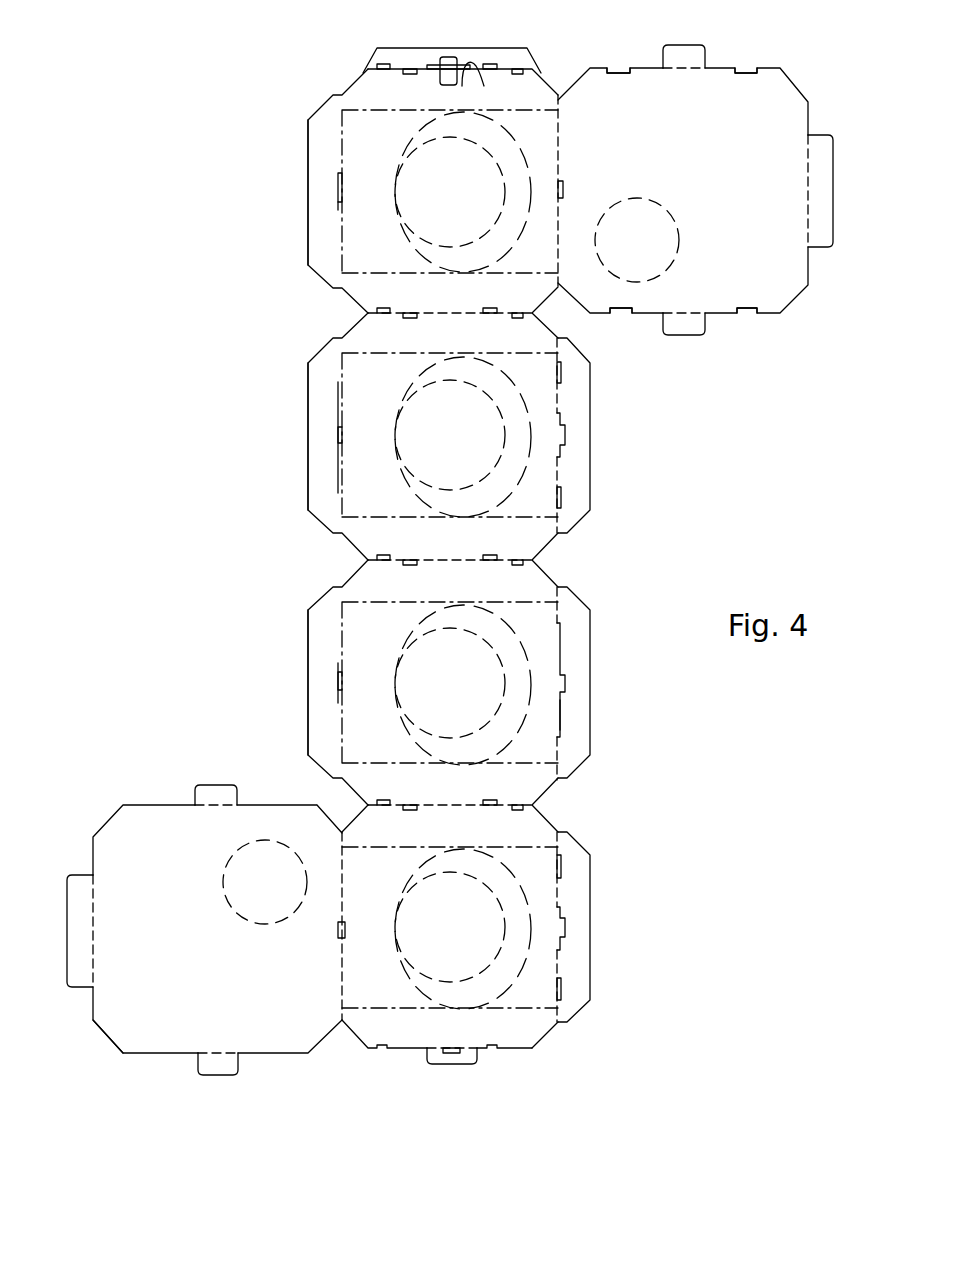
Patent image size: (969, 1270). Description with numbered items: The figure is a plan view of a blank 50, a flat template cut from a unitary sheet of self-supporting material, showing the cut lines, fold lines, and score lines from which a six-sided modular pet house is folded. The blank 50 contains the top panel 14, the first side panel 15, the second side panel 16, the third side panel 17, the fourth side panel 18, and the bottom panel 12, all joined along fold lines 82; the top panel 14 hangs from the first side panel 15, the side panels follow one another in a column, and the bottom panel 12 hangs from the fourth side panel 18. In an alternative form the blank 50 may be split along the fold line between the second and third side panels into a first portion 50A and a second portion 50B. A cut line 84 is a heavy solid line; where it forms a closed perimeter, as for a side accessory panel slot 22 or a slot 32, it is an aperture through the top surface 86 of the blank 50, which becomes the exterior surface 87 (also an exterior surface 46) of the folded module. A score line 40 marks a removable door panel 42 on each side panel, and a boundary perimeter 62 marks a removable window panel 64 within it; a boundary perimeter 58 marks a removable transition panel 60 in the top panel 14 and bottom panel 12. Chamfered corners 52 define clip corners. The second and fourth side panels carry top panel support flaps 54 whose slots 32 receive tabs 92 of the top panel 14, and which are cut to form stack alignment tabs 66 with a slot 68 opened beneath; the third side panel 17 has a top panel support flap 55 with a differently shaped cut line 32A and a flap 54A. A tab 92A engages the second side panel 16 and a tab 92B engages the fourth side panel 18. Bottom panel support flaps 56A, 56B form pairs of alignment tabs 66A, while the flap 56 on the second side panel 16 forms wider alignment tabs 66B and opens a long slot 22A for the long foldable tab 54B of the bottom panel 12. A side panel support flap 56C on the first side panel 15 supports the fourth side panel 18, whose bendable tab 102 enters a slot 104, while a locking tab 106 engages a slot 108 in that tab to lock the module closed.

The bottom panel 12 is at (125, 830).
The top panel 14 is at (719, 159).
The first side panel 15 is at (519, 127).
The second side panel 16 is at (519, 364).
The third side panel 17 is at (519, 610).
The fourth side panel 18 is at (520, 859).
The side accessory panel slot 22 is at (517, 69).
The long slot 22A is at (338, 420).
The slot 32 is at (458, 72).
The cut line 32A is at (560, 715).
The score line 40 is at (437, 110).
The removable door panel 42 is at (379, 265).
The exterior surface 46 is at (790, 120).
The blank 50 is at (147, 98).
The first portion 50A is at (582, 517).
The second portion 50B is at (550, 793).
The chamfered corner 52 is at (355, 78).
The top panel support flap 54 is at (590, 420).
The flap 54A is at (836, 186).
The long foldable tab 54B is at (67, 907).
The top panel support flap 55 is at (590, 698).
The bottom panel support flap 56 is at (308, 400).
The bottom panel support flap 56A is at (308, 152).
The bottom panel support flap 56B is at (308, 624).
The side panel support flap 56C is at (378, 56).
The boundary perimeter 58 is at (608, 228).
The removable transition panel 60 is at (640, 213).
The boundary perimeter 62 is at (433, 733).
The removable window panel 64 is at (433, 242).
The stack alignment tab 66 is at (565, 188).
The alignment tab 66A is at (338, 173).
The alignment tab 66B is at (338, 388).
The stack alignment channel 68 is at (342, 188).
The fold line 82 is at (342, 245).
The cut line 84 is at (493, 315).
The top surface 86 is at (145, 897).
The exterior surface 87 is at (130, 1040).
The tab 92 is at (205, 786).
The tab 92A is at (685, 337).
The tab 92B is at (685, 44).
The bendable tab 102 is at (463, 1068).
The slot 104 is at (477, 70).
The locking tab 106 is at (440, 74).
The slot 108 is at (452, 1055).